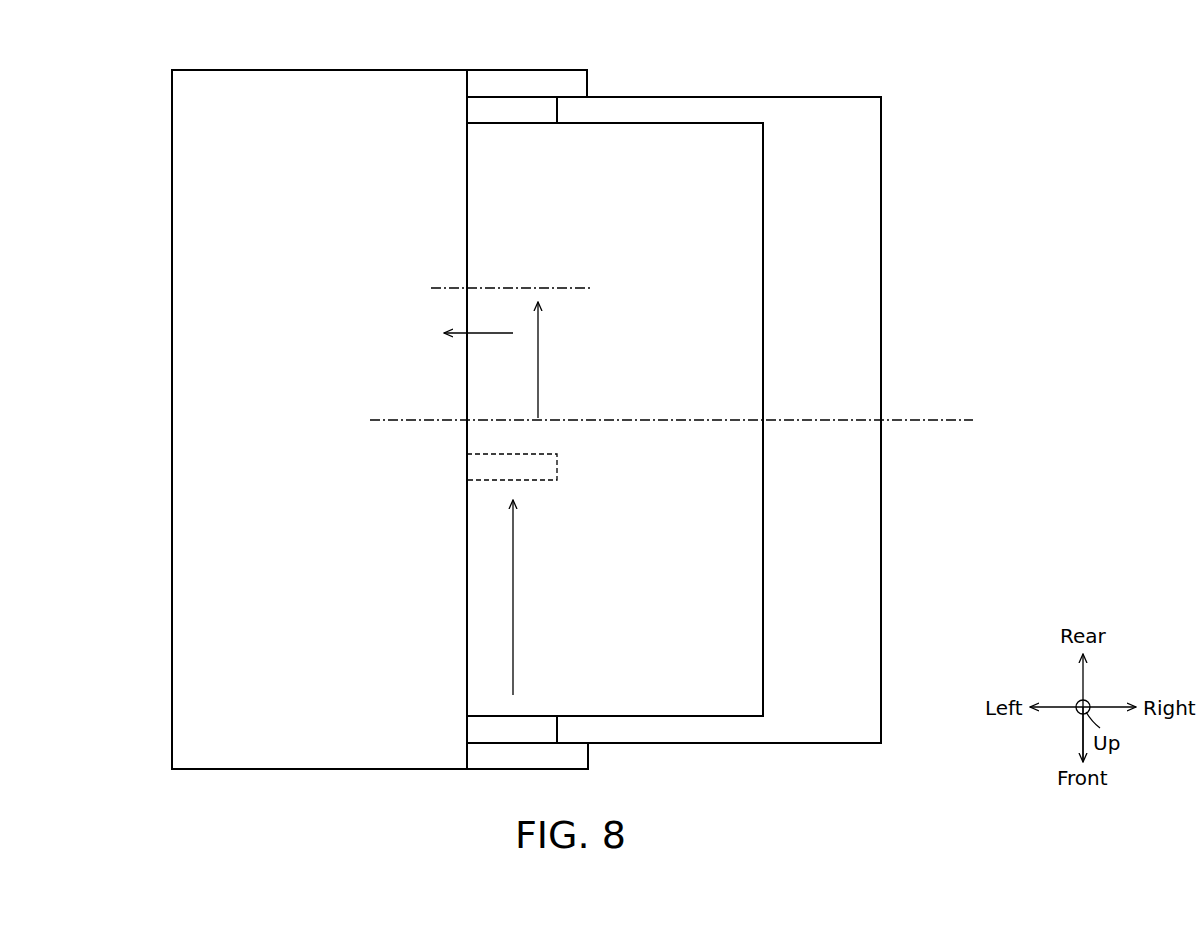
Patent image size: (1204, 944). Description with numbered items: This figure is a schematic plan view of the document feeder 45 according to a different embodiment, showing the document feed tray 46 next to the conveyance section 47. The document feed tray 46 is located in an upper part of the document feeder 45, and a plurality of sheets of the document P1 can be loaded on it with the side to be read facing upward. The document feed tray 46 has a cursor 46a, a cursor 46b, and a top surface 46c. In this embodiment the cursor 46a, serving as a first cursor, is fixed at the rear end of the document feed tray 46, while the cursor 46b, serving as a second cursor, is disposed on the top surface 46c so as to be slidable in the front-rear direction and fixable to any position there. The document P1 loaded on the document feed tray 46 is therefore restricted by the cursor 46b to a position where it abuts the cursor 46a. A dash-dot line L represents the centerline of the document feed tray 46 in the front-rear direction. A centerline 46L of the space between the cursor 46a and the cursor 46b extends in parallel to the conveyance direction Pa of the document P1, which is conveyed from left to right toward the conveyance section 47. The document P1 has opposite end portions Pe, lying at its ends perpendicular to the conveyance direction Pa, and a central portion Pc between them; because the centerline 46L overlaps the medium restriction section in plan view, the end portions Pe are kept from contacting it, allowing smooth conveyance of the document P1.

The conveyance section 47 is at (241, 82).
The document feed tray 46 is at (842, 112).
The cursor 46a is at (515, 105).
The cursor 46b is at (509, 730).
The top surface 46c is at (843, 633).
The centerline 46L is at (538, 288).
The document feeder 45 is at (908, 135).
The document P1 is at (720, 122).
The end portions Pe is at (453, 133).
The conveyance direction Pa is at (479, 317).
The central portion Pc is at (445, 398).
The centerline L is at (935, 420).